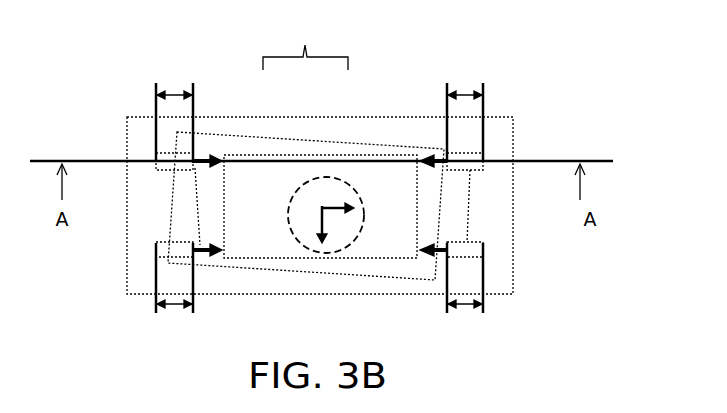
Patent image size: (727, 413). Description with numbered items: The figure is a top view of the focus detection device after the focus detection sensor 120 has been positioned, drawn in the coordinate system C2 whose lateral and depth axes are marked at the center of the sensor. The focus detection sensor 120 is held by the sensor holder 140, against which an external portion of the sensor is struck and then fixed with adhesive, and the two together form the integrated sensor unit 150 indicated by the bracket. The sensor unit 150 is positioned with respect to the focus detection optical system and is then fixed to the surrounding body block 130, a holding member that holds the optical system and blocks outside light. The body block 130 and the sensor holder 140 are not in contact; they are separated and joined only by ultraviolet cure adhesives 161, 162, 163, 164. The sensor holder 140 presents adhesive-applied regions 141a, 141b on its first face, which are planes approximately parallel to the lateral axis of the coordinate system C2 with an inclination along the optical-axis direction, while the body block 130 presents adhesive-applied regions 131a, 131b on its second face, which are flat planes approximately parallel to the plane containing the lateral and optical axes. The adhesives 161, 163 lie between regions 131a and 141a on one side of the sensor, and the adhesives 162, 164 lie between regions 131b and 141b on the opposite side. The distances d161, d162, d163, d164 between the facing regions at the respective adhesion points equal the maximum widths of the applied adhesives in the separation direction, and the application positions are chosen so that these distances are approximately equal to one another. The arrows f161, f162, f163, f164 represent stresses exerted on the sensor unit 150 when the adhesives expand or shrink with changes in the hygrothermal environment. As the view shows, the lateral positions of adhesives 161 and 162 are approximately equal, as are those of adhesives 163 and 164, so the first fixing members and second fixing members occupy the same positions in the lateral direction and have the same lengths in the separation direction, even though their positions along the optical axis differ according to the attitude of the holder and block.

The focus detection sensor 120 is at (299, 173).
The body block 130 is at (277, 278).
The sensor holder 140 is at (253, 142).
The sensor unit 150 is at (305, 43).
The adhesive 161 is at (158, 160).
The adhesive 162 is at (475, 160).
The adhesive 163 is at (160, 258).
The adhesive 164 is at (460, 250).
The adhesive-applied region 131a is at (158, 184).
The adhesive-applied region 131b is at (481, 181).
The adhesive-applied region 141a is at (178, 207).
The adhesive-applied region 141b is at (457, 208).
The distance d161 is at (174, 112).
The distance d162 is at (468, 112).
The distance d163 is at (174, 288).
The distance d164 is at (467, 292).
The stress f161 is at (207, 158).
The stress f162 is at (428, 158).
The stress f163 is at (200, 258).
The stress f164 is at (420, 252).
The coordinate system C2 is at (342, 182).